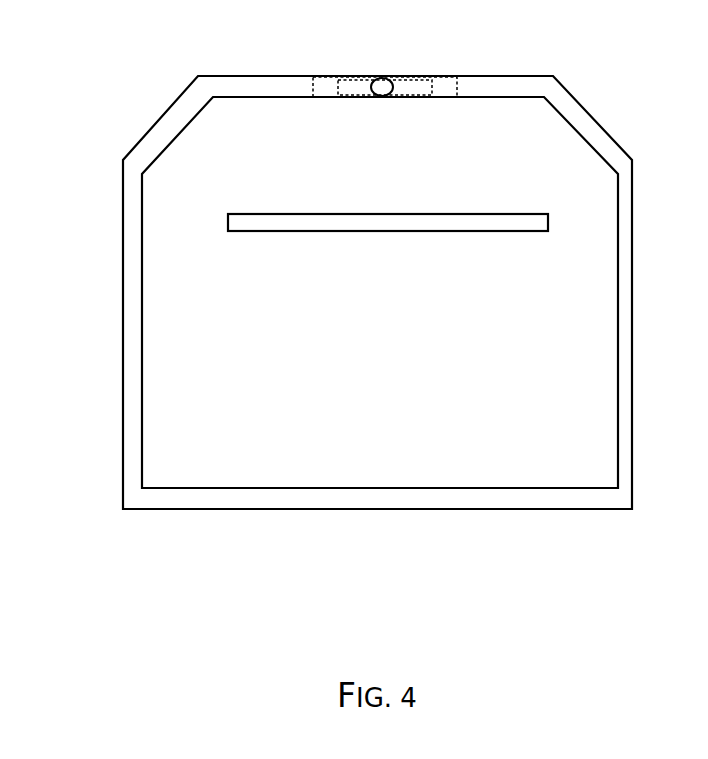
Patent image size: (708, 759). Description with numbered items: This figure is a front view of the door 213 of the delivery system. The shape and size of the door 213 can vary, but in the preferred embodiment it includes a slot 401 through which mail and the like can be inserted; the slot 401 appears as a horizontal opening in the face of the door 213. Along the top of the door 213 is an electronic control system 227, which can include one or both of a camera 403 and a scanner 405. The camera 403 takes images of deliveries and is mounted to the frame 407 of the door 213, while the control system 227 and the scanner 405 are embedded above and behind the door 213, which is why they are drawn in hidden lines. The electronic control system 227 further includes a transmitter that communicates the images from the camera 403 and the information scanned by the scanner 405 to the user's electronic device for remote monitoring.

The frame 407 is at (123, 190).
The door 213 is at (142, 305).
The slot 401 is at (400, 232).
The camera 403 is at (394, 92).
The scanner 405 is at (338, 88).
The electronic control system 227 is at (457, 95).